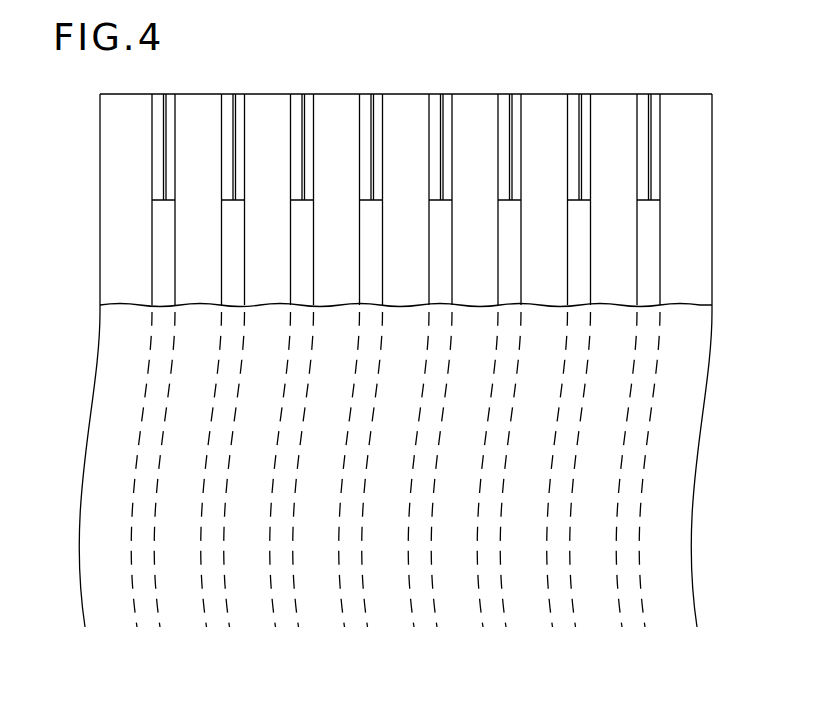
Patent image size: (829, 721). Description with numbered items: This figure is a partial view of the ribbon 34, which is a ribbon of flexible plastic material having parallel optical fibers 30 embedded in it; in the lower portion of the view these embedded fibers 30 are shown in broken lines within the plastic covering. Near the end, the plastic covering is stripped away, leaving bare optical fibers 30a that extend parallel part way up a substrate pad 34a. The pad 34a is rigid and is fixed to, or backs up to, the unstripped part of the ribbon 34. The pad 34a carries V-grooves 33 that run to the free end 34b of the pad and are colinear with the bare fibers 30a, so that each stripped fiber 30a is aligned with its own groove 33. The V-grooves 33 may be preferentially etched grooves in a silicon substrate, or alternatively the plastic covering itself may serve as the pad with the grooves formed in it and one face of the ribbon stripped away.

The optical fibers 30 is at (628, 516).
The bare optical fibers 30a is at (160, 237).
The V-grooves 33 is at (648, 133).
The ribbon 34 is at (695, 427).
The substrate pad 34a is at (712, 275).
The free end 34b is at (480, 94).